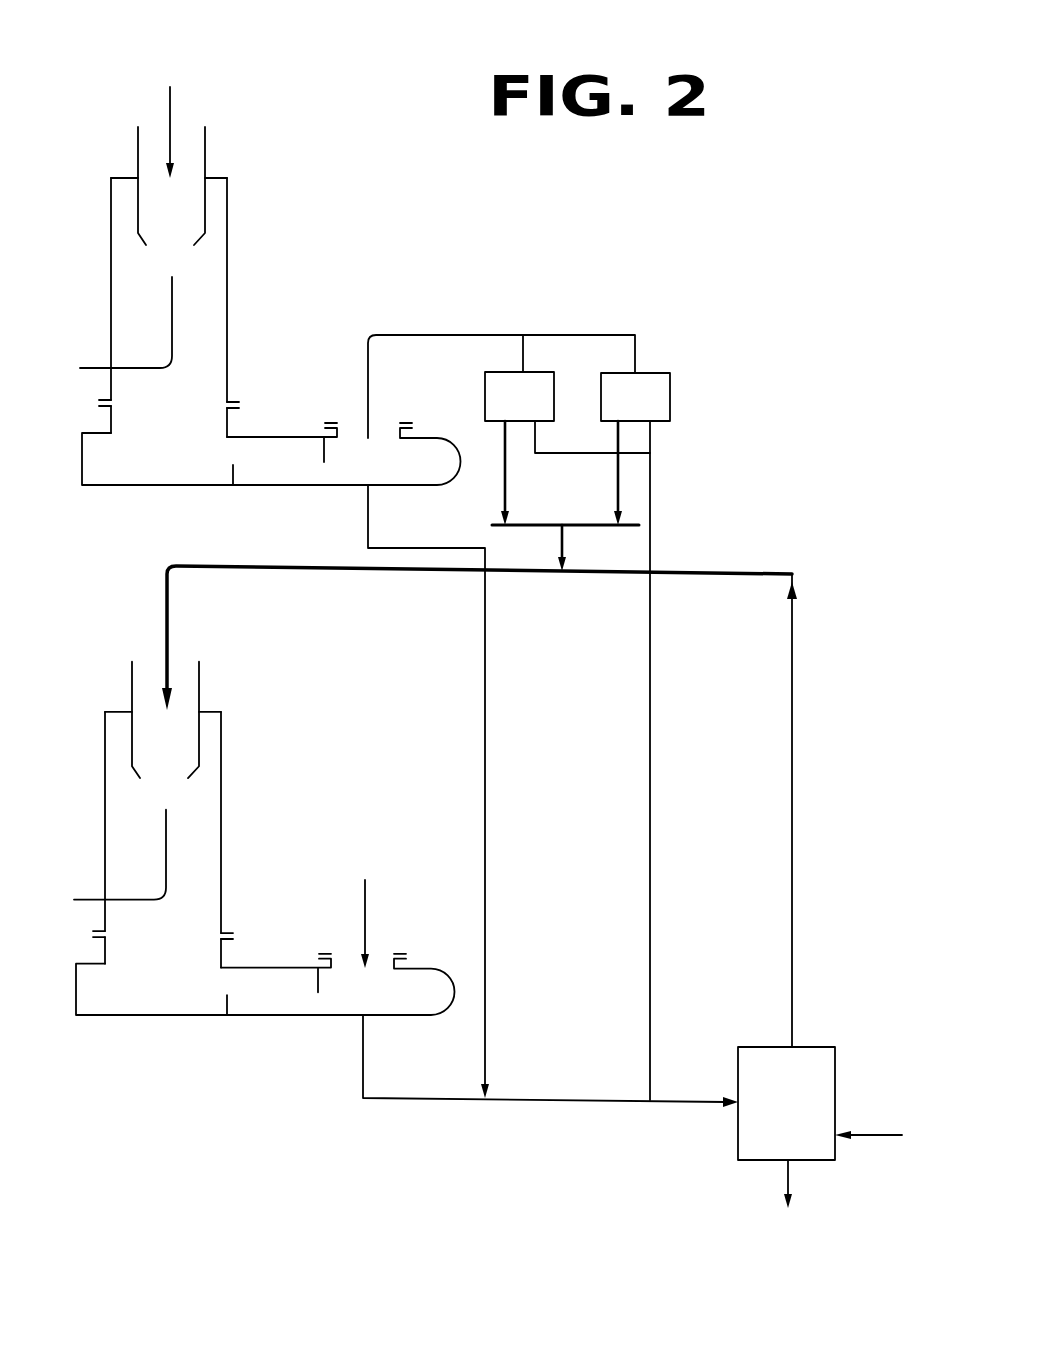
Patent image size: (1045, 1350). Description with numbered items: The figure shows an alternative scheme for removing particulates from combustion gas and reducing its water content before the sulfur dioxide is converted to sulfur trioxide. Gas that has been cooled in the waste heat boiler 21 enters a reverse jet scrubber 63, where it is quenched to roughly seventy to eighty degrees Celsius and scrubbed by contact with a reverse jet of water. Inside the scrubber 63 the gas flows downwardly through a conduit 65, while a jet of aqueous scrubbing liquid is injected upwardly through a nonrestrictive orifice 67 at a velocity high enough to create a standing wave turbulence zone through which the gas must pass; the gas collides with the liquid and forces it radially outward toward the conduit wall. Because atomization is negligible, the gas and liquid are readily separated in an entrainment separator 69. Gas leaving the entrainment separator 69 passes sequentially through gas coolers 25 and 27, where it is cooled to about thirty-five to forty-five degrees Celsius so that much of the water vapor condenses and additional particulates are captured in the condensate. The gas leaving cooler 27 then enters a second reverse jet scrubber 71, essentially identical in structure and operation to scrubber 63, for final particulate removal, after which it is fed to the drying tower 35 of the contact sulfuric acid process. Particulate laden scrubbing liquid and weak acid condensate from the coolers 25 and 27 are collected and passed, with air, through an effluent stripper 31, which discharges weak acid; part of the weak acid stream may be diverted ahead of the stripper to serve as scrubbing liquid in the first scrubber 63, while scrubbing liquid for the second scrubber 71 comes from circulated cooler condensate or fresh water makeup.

The waste heat boiler 21 is at (177, 90).
The reverse jet scrubber 63 is at (102, 234).
The conduit 65 is at (228, 255).
The nonrestrictive orifice 67 is at (172, 284).
The entrainment separator 69 is at (186, 470).
The gas cooler 25 is at (485, 398).
The gas cooler 27 is at (670, 402).
The reverse jet scrubber 71 is at (107, 758).
The drying tower 35 is at (377, 886).
The effluent stripper 31 is at (835, 1090).